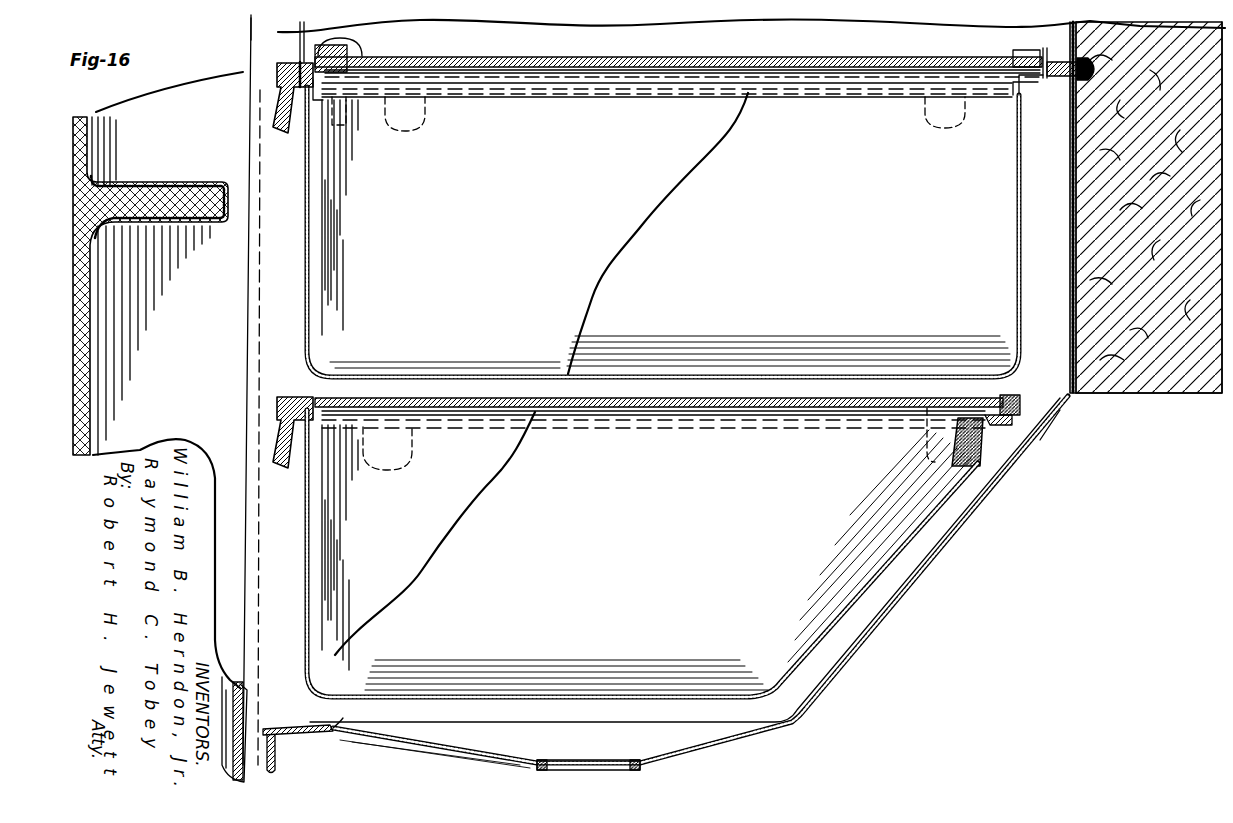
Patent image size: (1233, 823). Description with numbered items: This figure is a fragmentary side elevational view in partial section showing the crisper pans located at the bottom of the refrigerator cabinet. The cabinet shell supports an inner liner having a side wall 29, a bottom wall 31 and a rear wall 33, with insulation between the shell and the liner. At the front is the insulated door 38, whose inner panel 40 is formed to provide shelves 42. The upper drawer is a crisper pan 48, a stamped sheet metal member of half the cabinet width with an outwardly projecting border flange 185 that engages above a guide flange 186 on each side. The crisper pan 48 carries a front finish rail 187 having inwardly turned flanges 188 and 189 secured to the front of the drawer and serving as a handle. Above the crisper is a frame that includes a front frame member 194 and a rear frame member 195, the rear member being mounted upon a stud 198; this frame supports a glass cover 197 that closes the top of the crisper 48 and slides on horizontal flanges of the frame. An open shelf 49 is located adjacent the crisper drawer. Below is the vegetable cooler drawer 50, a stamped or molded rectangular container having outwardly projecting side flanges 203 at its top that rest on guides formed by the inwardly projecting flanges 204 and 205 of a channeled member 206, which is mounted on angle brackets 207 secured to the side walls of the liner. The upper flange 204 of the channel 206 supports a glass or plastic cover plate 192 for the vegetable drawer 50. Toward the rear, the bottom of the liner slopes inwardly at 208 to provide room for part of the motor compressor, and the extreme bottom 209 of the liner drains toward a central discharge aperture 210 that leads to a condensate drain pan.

The side wall 29 is at (263, 380).
The bottom wall 31 is at (330, 730).
The rear wall 33 is at (1072, 261).
The insulated door 38 is at (105, 105).
The inner panel 40 is at (161, 100).
The shelves 42 is at (167, 190).
The crisper pan 48 is at (507, 103).
The shelf 49 is at (418, 62).
The vegetable cooler drawer 50 is at (340, 525).
The border flange 185 is at (1021, 95).
The guide flange 186 is at (677, 94).
The front finish rail 187 is at (276, 82).
The inwardly turned flange 188 is at (293, 100).
The inwardly turned flange 189 is at (292, 72).
The cover plate 192 is at (963, 398).
The front frame member 194 is at (314, 57).
The rear frame member 195 is at (1044, 78).
The glass cover 197 is at (600, 64).
The stud 198 is at (1057, 52).
The side flanges 203 is at (978, 433).
The upper flange 204 is at (993, 397).
The flange 205 is at (1016, 452).
The channeled member 206 is at (1012, 421).
The angle brackets 207 is at (412, 452).
The inwardly sloping bottom portion 208 is at (948, 540).
The extreme bottom 209 is at (672, 750).
The central discharge aperture 210 is at (562, 770).